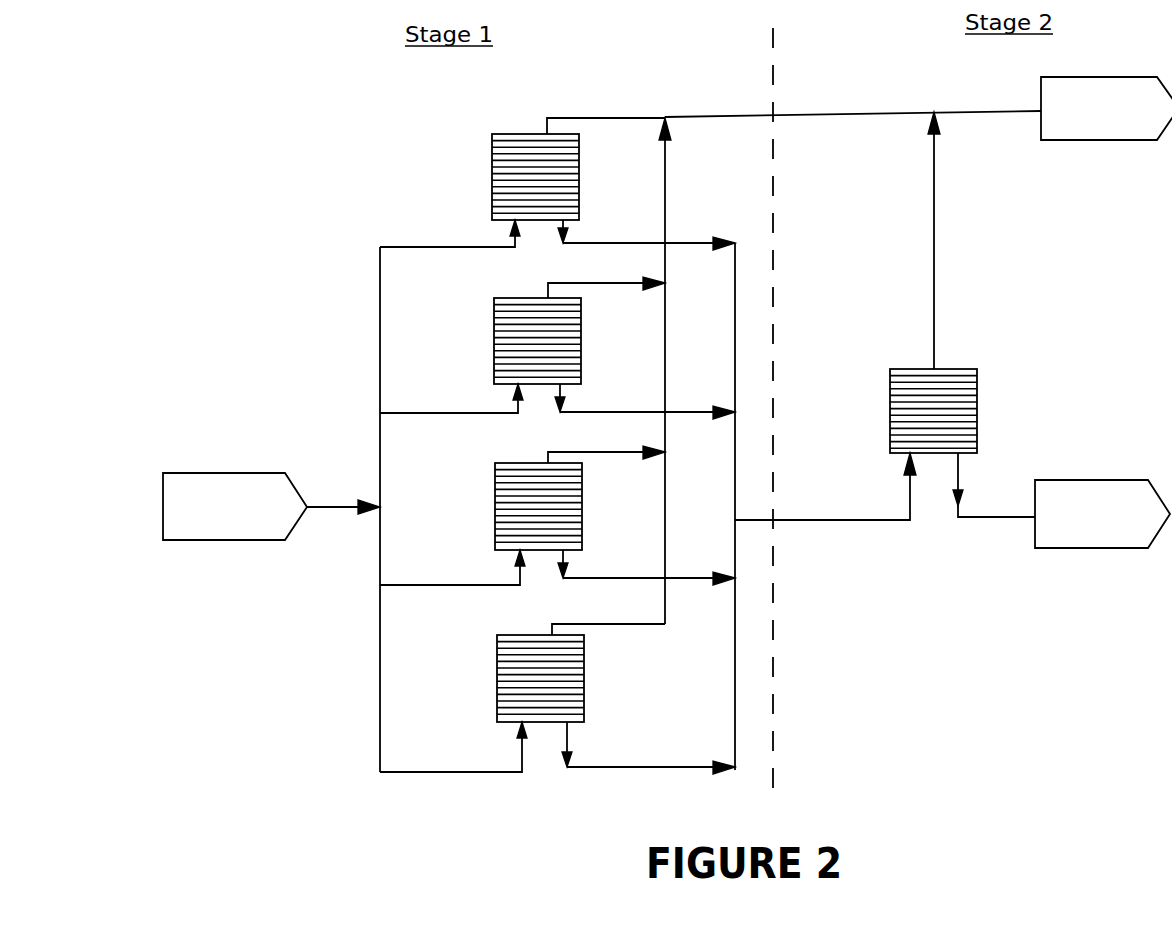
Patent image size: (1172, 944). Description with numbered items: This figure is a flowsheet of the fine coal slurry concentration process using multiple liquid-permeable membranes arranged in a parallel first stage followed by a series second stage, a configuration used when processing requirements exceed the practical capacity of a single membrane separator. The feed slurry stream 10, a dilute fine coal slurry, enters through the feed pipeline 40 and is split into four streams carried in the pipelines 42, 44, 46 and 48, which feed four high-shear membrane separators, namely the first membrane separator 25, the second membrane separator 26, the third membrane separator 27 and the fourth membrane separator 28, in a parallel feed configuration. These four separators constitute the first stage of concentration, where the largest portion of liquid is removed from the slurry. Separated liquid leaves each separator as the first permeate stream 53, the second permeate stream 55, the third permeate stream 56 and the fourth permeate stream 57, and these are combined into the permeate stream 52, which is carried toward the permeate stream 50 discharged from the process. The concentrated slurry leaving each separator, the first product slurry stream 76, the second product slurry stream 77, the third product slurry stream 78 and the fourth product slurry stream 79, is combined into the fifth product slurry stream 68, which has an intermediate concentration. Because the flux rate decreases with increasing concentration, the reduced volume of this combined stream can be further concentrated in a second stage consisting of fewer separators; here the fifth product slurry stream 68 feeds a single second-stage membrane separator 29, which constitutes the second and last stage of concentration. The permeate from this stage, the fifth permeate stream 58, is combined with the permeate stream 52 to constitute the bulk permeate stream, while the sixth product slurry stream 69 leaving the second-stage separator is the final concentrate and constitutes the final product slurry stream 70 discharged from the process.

The feed slurry stream 10 is at (227, 473).
The feed pipeline 40 is at (380, 470).
The pipeline 42 is at (426, 247).
The pipeline 44 is at (428, 413).
The pipeline 46 is at (433, 583).
The pipeline 48 is at (436, 774).
The first membrane separator 25 is at (492, 181).
The second membrane separator 26 is at (494, 345).
The third membrane separator 27 is at (495, 511).
The fourth membrane separator 28 is at (497, 680).
The first product slurry stream 76 is at (600, 243).
The second product slurry stream 77 is at (605, 416).
The third product slurry stream 78 is at (610, 583).
The fourth product slurry stream 79 is at (635, 770).
The first permeate stream 53 is at (615, 119).
The second permeate stream 55 is at (590, 294).
The third permeate stream 56 is at (585, 459).
The fourth permeate stream 57 is at (610, 627).
The permeate stream 52 is at (685, 202).
The permeate stream 50 is at (1095, 140).
The fifth permeate stream 58 is at (950, 260).
The second-stage membrane separator 29 is at (890, 410).
The fifth product slurry stream 68 is at (842, 522).
The sixth product slurry stream 69 is at (992, 518).
The product slurry stream 70 is at (1097, 480).